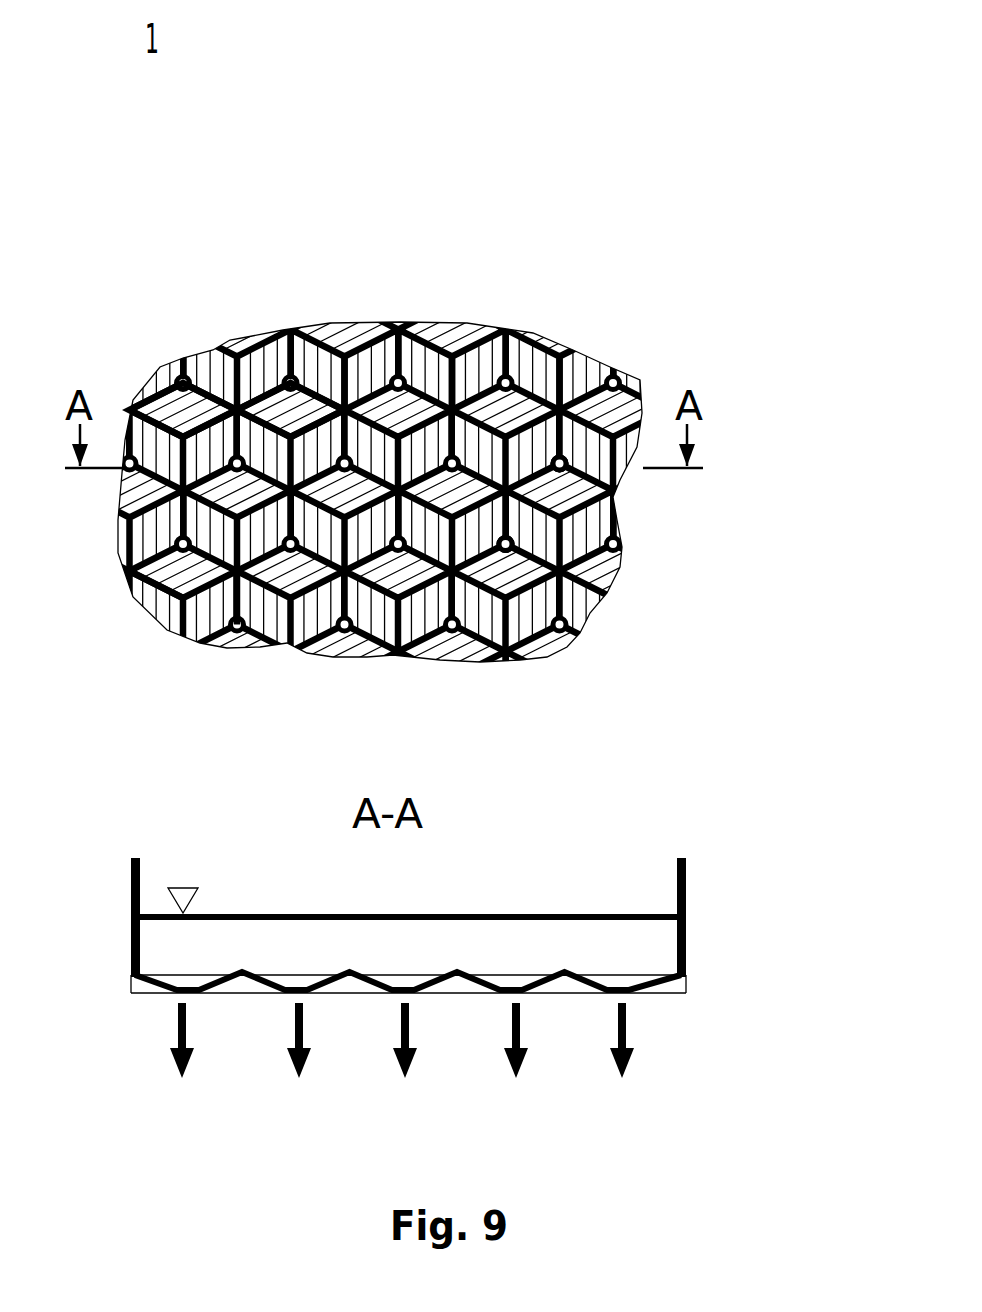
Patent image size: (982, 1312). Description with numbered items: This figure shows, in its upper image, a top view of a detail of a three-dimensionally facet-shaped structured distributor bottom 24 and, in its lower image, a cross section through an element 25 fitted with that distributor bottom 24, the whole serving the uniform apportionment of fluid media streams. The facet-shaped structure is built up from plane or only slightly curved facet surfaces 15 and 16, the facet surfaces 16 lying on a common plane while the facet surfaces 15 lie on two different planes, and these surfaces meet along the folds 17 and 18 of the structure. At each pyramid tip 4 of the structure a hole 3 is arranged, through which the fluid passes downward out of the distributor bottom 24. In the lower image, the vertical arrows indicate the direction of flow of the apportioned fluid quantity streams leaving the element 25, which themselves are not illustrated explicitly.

The hole 3 is at (563, 477).
The pyramid tip 4 is at (532, 504).
The facet surface 15 is at (528, 357).
The facet surface 16 is at (187, 413).
The fold 17 is at (228, 612).
The fold 18 is at (153, 592).
The distributor bottom 24 is at (585, 353).
The element 25 is at (684, 883).